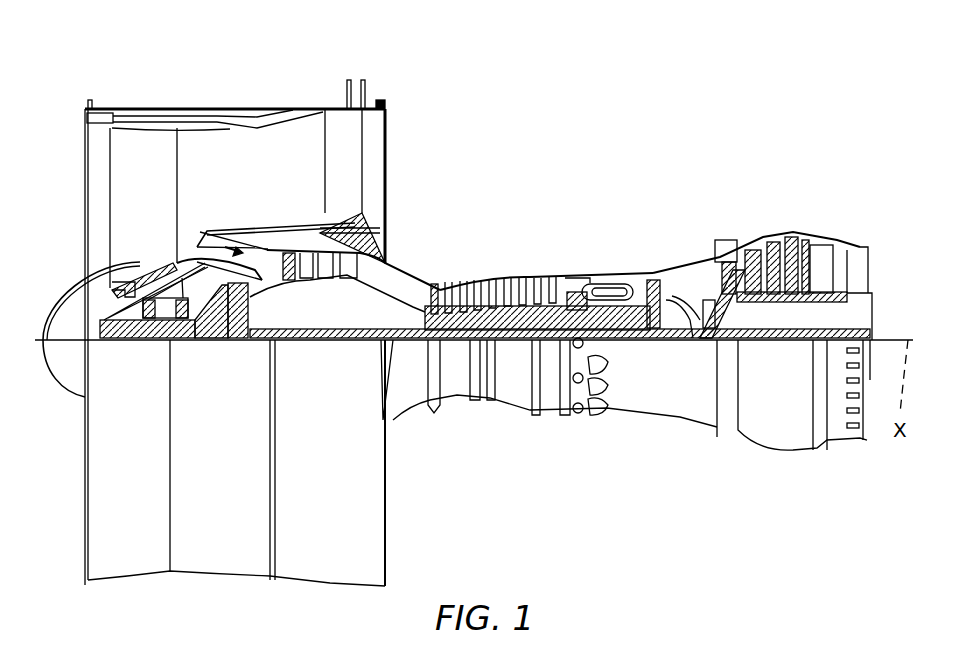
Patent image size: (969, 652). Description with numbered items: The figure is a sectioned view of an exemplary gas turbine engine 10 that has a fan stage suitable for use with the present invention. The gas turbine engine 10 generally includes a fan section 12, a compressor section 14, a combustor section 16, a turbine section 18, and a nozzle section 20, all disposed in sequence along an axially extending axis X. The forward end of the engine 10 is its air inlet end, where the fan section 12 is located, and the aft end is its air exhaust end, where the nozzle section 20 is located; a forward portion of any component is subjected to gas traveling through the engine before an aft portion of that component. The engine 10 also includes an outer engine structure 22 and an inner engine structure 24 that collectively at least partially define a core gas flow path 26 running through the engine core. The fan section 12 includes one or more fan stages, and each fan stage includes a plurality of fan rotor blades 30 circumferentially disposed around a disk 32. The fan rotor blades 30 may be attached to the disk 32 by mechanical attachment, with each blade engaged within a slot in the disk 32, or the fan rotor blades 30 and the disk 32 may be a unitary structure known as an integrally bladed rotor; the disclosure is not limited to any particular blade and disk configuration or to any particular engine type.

The gas turbine engine 10 is at (636, 112).
The fan section 12 is at (143, 105).
The compressor section 14 is at (437, 270).
The combustor section 16 is at (612, 290).
The turbine section 18 is at (768, 230).
The nozzle section 20 is at (870, 293).
The outer engine structure 22 is at (240, 235).
The inner engine structure 24 is at (275, 237).
The core gas flow path 26 is at (190, 242).
The fan rotor blades 30 is at (125, 178).
The disk 32 is at (130, 270).